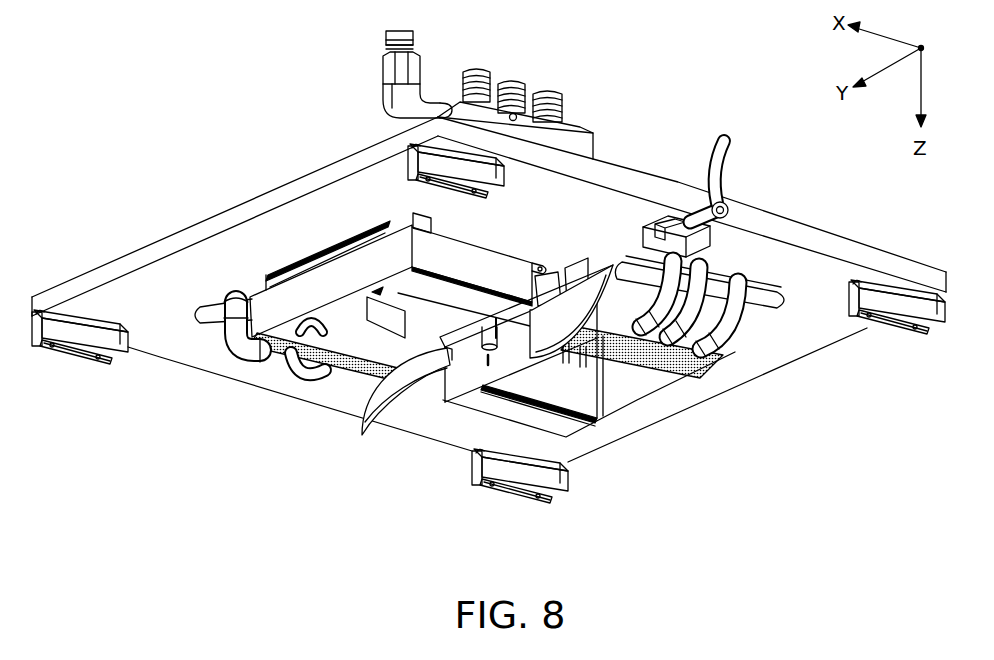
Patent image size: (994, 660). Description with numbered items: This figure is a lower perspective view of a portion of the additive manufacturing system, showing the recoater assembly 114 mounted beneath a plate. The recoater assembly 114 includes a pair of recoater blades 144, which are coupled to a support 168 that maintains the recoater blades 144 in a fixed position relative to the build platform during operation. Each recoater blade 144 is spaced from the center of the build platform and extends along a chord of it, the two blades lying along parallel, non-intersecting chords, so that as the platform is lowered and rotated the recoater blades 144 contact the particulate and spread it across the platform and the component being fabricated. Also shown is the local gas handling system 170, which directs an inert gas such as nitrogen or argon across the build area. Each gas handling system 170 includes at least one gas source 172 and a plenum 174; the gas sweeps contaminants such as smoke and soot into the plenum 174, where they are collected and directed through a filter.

The recoater assembly 114 is at (385, 437).
The recoater blades 144 is at (362, 417).
The support 168 is at (568, 276).
The gas handling system 170 is at (210, 350).
The gas source 172 is at (292, 380).
The plenum 174 is at (318, 240).